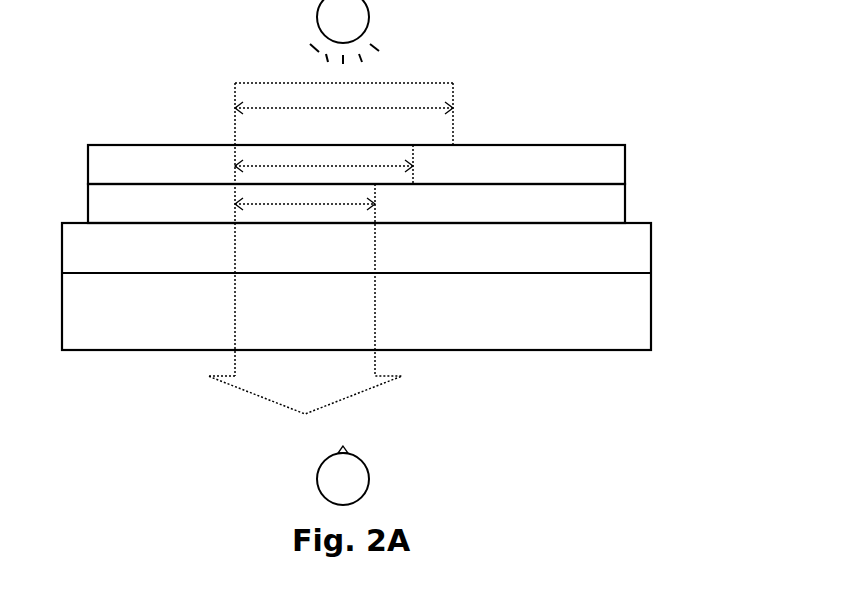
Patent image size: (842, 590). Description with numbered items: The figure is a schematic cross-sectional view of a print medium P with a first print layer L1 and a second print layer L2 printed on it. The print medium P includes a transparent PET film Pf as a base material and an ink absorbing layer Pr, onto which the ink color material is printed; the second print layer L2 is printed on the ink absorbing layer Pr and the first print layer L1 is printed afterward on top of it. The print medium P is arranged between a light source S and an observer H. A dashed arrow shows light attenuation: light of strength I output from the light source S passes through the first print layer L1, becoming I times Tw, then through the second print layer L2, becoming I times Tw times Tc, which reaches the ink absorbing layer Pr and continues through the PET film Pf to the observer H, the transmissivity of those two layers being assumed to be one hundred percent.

The light source S is at (344, 32).
The observer H is at (343, 475).
The strength of the light I is at (344, 229).
The first print layer L1 is at (663, 146).
The second print layer L2 is at (663, 185).
The print medium P is at (418, 286).
The ink absorbing layer Pr is at (663, 224).
The PET film Pf is at (393, 312).